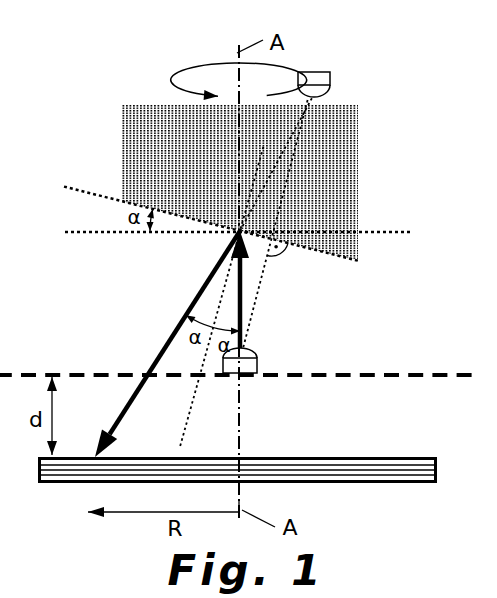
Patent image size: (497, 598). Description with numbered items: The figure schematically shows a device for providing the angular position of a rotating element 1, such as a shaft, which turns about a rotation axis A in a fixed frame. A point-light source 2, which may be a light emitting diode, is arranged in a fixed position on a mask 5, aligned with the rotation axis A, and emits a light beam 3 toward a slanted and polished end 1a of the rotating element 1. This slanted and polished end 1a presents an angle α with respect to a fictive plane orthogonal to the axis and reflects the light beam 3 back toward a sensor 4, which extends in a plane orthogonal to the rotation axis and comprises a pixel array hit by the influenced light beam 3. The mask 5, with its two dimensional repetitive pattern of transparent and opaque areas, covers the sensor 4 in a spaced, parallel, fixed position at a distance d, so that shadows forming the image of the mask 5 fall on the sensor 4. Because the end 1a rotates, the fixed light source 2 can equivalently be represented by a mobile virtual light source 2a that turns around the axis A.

The rotating element 1 is at (345, 157).
The slanted and polished end 1a is at (169, 210).
The point-light source 2 is at (253, 358).
The mobile virtual light source 2a is at (325, 80).
The light beam 3 is at (192, 302).
The sensor 4 is at (342, 477).
The mask 5 is at (415, 371).